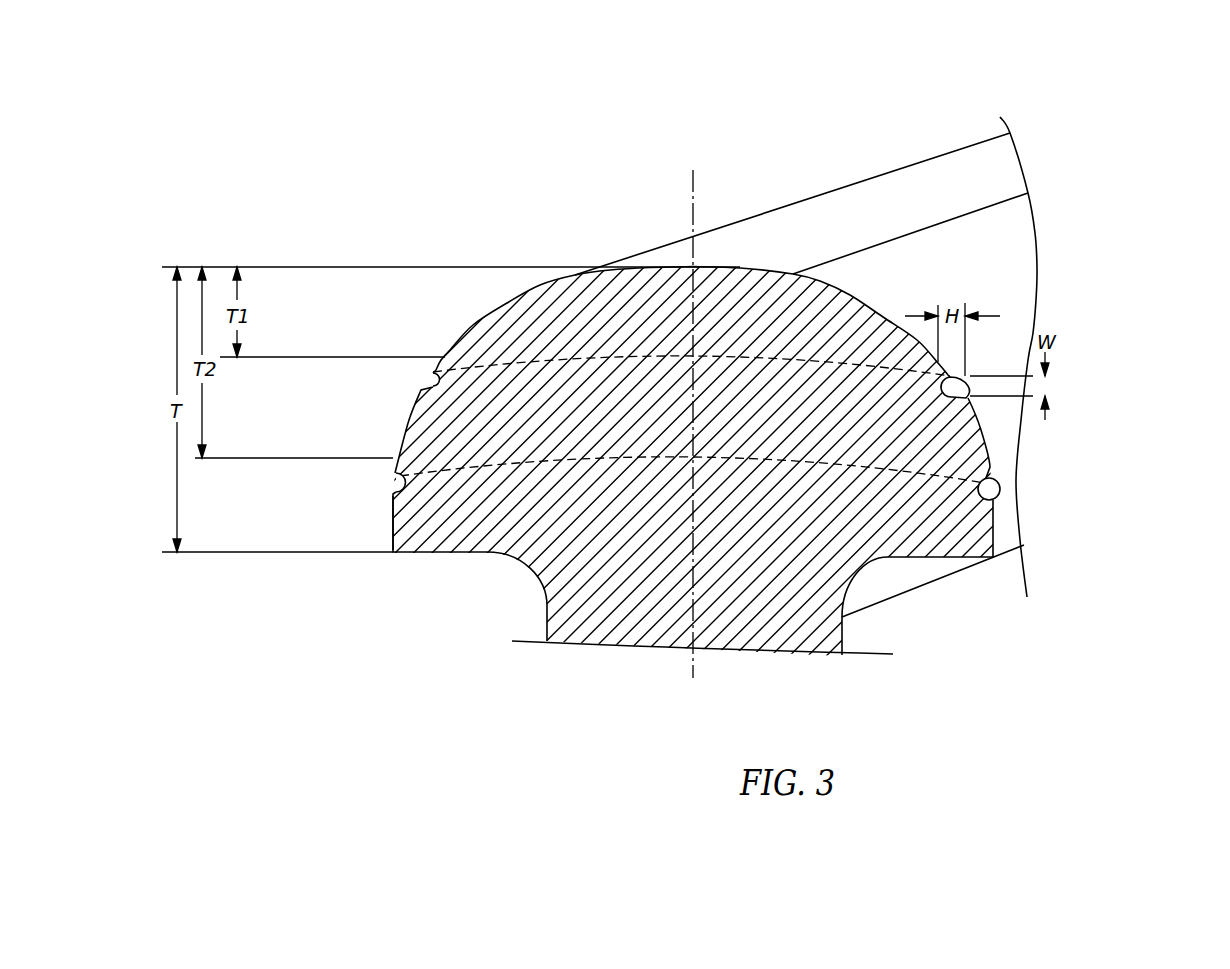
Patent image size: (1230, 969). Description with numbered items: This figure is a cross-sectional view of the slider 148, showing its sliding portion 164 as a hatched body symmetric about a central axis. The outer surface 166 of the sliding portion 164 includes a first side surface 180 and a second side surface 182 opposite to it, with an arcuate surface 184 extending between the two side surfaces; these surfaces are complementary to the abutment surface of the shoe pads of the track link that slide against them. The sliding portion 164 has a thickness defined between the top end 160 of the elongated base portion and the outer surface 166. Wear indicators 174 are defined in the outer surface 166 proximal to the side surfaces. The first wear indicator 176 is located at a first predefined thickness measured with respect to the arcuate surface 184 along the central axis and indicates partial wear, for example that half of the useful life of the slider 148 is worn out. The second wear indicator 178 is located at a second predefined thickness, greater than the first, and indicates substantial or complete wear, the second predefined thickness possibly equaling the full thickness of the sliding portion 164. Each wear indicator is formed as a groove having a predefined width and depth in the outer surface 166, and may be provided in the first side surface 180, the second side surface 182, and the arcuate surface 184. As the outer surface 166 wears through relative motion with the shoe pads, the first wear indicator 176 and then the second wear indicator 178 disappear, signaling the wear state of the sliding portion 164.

The slider 148 is at (1130, 75).
The top end of the elongated base portion 160 is at (433, 563).
The sliding portion 164 is at (1055, 222).
The outer surface 166 is at (895, 228).
The wear indicators 174 is at (350, 422).
The first wear indicator 176 is at (430, 383).
The second wear indicator 178 is at (393, 487).
The first side surface 180 is at (393, 512).
The second side surface 182 is at (1005, 522).
The arcuate surface 184 is at (1010, 295).